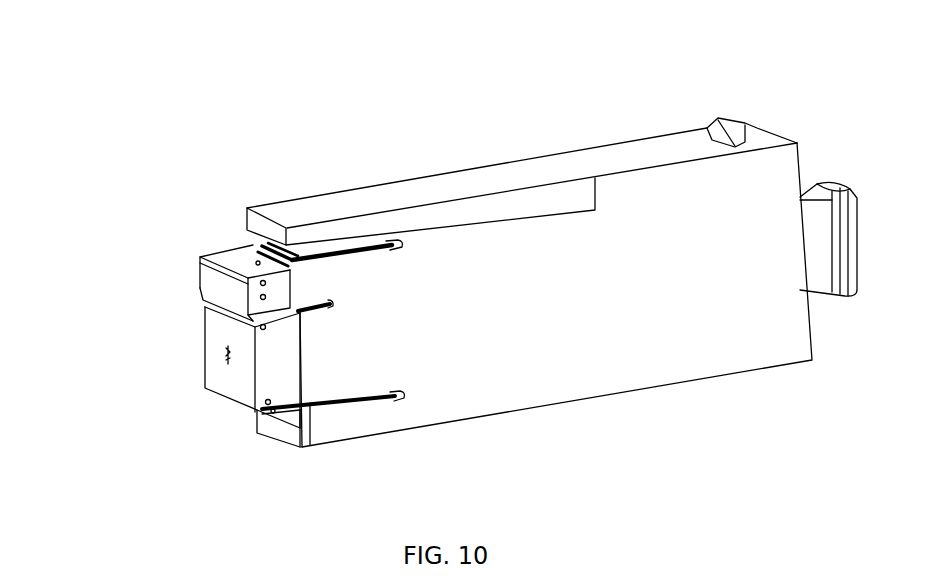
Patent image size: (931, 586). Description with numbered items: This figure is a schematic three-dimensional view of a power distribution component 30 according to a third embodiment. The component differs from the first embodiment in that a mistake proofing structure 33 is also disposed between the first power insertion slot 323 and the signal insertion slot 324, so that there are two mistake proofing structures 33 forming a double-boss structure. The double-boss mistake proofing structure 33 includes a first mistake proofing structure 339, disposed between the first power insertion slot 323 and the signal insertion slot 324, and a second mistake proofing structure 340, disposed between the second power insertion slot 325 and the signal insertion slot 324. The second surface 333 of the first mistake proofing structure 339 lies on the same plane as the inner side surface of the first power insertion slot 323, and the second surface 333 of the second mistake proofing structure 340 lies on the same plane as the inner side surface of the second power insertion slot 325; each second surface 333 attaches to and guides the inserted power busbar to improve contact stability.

The power distribution component 30 is at (536, 50).
The mistake proofing structure 33 is at (92, 220).
The first power insertion slot 323 is at (369, 192).
The signal insertion slot 324 is at (346, 398).
The second power insertion slot 325 is at (371, 427).
The second surface 333 is at (218, 330).
The first mistake proofing structure 339 is at (203, 266).
The second mistake proofing structure 340 is at (213, 331).